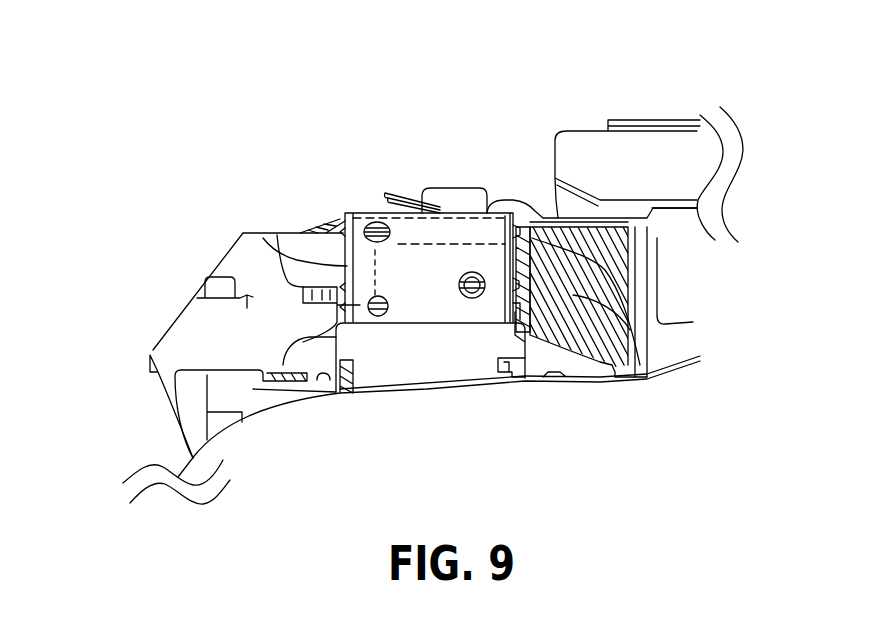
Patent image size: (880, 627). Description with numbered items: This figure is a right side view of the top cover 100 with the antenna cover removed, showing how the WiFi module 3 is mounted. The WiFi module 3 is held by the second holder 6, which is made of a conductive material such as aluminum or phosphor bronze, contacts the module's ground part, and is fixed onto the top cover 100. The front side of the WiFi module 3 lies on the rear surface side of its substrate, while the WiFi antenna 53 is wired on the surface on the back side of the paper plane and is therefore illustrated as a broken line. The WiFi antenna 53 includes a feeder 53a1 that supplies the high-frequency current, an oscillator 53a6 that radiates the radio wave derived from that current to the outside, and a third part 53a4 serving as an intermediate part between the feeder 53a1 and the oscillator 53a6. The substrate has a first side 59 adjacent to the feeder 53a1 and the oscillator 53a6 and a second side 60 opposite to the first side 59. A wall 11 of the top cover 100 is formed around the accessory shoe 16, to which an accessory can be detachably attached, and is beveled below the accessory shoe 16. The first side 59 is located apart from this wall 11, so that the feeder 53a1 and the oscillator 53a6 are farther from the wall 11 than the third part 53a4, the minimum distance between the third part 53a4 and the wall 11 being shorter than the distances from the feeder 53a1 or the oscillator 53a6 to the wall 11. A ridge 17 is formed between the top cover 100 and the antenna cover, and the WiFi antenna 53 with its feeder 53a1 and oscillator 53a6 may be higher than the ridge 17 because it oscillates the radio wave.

The WiFi module 3 is at (452, 270).
The second holder 6 is at (393, 363).
The wall 11 is at (645, 378).
The accessory shoe 16 is at (623, 120).
The ridge 17 is at (437, 388).
The WiFi antenna 53 is at (435, 193).
The feeder 53a1 is at (303, 288).
The third part 53a4 is at (490, 214).
The oscillator 53a6 is at (340, 215).
The first side 59 is at (263, 238).
The second side 60 is at (623, 292).
The top cover 100 is at (153, 352).